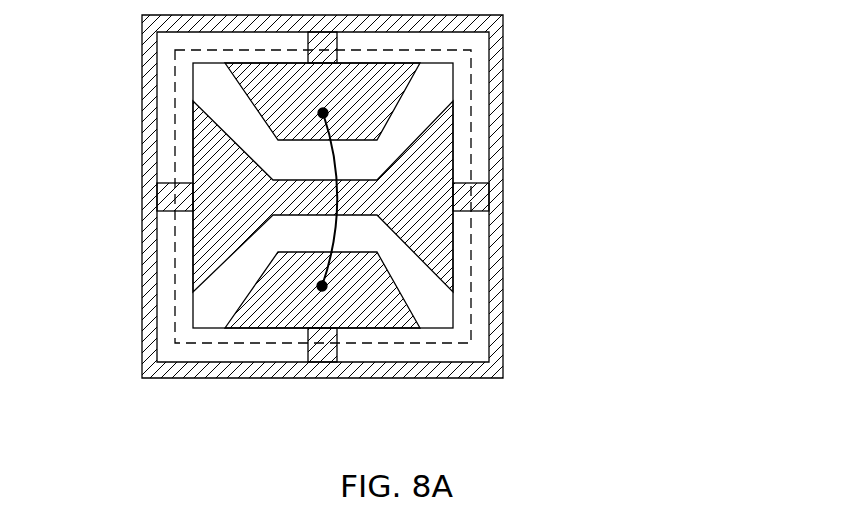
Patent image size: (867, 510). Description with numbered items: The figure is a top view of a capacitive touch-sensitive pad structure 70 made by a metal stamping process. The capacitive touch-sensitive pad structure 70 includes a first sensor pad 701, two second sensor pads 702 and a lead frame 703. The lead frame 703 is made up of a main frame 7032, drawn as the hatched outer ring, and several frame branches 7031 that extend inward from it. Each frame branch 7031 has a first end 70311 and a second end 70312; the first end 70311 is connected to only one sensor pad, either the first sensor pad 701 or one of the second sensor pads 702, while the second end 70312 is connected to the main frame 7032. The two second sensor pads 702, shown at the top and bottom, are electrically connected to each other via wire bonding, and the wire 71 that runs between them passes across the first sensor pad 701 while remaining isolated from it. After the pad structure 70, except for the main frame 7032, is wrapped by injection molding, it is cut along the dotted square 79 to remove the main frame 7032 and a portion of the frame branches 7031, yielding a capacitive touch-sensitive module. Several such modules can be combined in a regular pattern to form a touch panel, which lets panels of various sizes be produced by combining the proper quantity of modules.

The capacitive touch-sensitive pad structure 70 is at (426, 196).
The first sensor pad 701 is at (432, 229).
The second sensor pads 702 is at (378, 87).
The lead frame 703 is at (426, 196).
The frame branches 7031 is at (490, 190).
The main frame 7032 is at (490, 108).
The first end 70311 is at (454, 197).
The second end 70312 is at (497, 183).
The wire 71 is at (330, 165).
The dotted square 79 is at (175, 126).